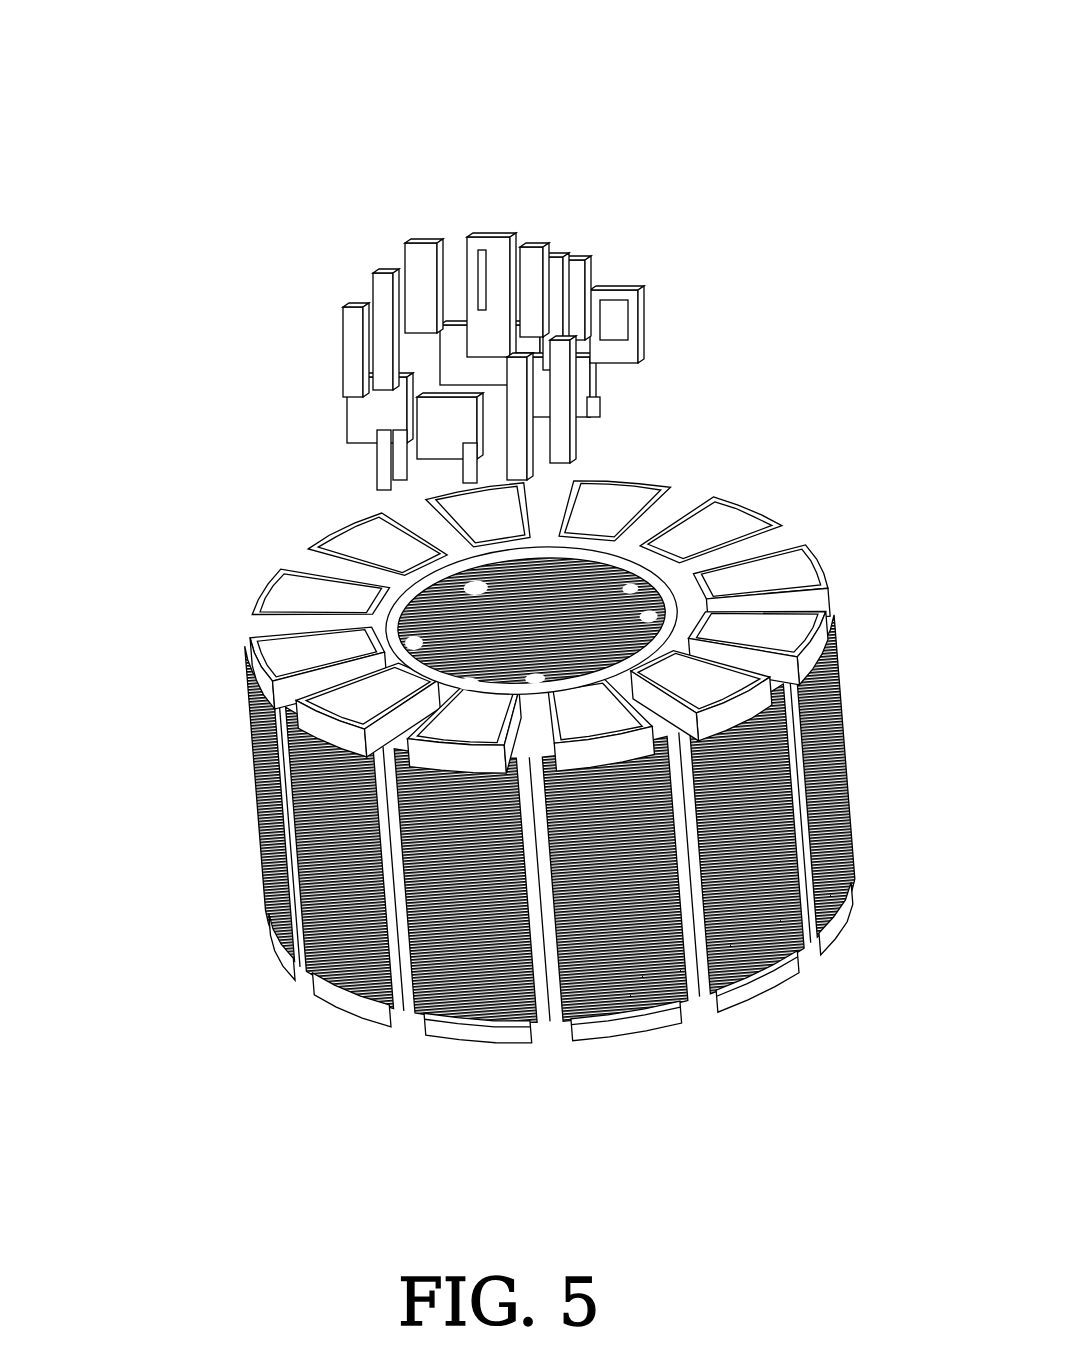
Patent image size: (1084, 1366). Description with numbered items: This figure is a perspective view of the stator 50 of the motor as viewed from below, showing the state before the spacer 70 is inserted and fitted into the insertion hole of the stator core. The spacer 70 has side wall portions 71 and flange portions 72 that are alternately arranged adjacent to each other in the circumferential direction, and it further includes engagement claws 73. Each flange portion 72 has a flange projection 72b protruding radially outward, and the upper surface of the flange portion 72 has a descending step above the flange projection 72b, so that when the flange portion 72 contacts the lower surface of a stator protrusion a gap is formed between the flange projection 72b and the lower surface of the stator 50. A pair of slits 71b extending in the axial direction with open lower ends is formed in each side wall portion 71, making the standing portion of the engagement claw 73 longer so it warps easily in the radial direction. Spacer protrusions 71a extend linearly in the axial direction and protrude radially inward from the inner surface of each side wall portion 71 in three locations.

The stator 50 is at (499, 758).
The spacer 70 is at (530, 246).
The side wall portion 71 is at (590, 458).
The spacer protrusion 71a is at (497, 240).
The slits 71b is at (586, 335).
The flange portion 72 is at (560, 410).
The flange projection 72b is at (580, 440).
The engagement claw 73 is at (540, 248).